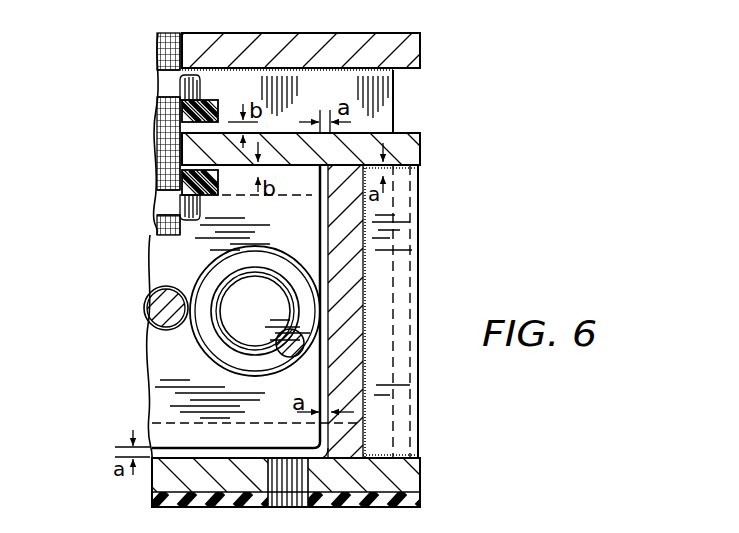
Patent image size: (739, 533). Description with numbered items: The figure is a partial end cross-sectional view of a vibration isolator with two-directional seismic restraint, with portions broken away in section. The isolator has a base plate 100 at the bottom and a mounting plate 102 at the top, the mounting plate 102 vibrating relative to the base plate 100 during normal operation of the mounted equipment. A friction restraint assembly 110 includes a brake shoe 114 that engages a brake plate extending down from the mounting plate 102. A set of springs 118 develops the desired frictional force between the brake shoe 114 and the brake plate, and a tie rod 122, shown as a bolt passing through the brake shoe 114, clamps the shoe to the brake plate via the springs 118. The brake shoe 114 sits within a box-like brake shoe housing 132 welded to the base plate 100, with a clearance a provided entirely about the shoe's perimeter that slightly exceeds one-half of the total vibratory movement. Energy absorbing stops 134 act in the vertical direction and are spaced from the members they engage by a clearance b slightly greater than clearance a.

The base plate 100 is at (408, 474).
The mounting plate 102 is at (410, 45).
The friction restraint assembly 110 is at (190, 311).
The brake shoe 114 is at (163, 362).
The springs 118 is at (208, 282).
The tie rod 122 is at (163, 310).
The brake shoe housing 132 is at (422, 144).
The energy absorbing stop 134 is at (214, 97).